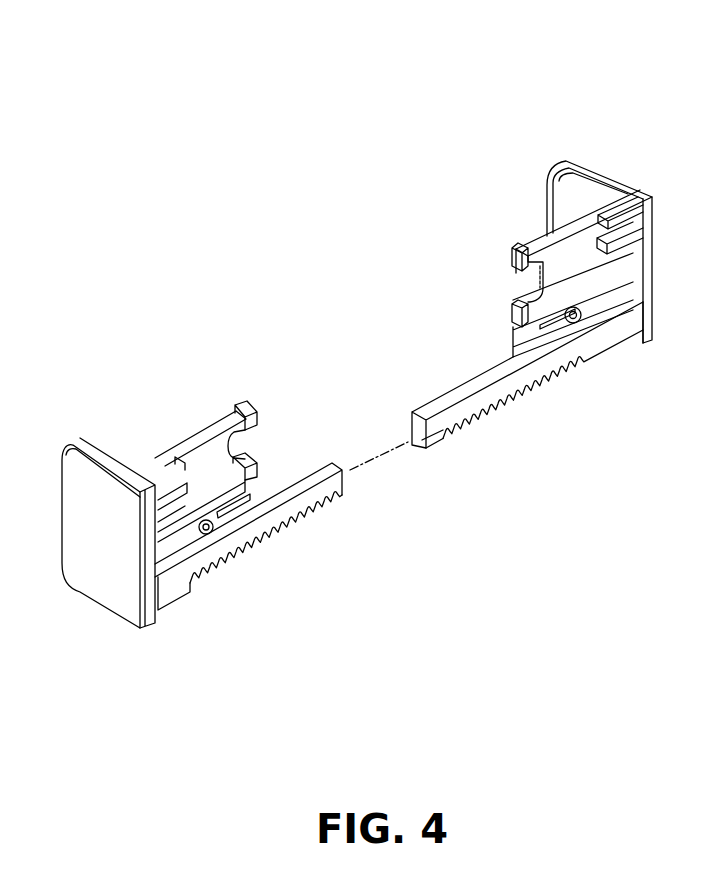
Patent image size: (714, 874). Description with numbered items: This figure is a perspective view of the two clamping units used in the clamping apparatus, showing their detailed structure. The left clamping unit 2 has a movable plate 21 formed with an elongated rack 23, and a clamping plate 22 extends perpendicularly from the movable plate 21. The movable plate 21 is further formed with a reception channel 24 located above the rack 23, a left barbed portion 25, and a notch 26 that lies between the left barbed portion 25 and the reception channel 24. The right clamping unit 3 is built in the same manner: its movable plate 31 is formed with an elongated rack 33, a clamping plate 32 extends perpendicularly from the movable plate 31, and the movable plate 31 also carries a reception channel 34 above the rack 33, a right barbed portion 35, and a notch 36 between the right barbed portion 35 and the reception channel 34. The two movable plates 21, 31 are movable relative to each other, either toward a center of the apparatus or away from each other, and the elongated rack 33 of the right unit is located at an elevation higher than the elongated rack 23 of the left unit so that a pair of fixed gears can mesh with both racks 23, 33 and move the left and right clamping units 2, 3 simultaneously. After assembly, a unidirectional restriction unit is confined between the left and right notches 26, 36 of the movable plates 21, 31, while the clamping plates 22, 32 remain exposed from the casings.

The left clamping unit 2 is at (610, 47).
The movable plate 21 is at (562, 255).
The clamping plate 22 is at (602, 175).
The elongated rack 23 is at (488, 415).
The reception channel 24 is at (553, 330).
The left barbed portion 25 is at (517, 268).
The notch 26 is at (528, 283).
The right clamping unit 3 is at (160, 278).
The movable plate 31 is at (213, 468).
The clamping plate 32 is at (93, 507).
The elongated rack 33 is at (250, 545).
The reception channel 34 is at (237, 507).
The right barbed portion 35 is at (250, 424).
The notch 36 is at (240, 445).